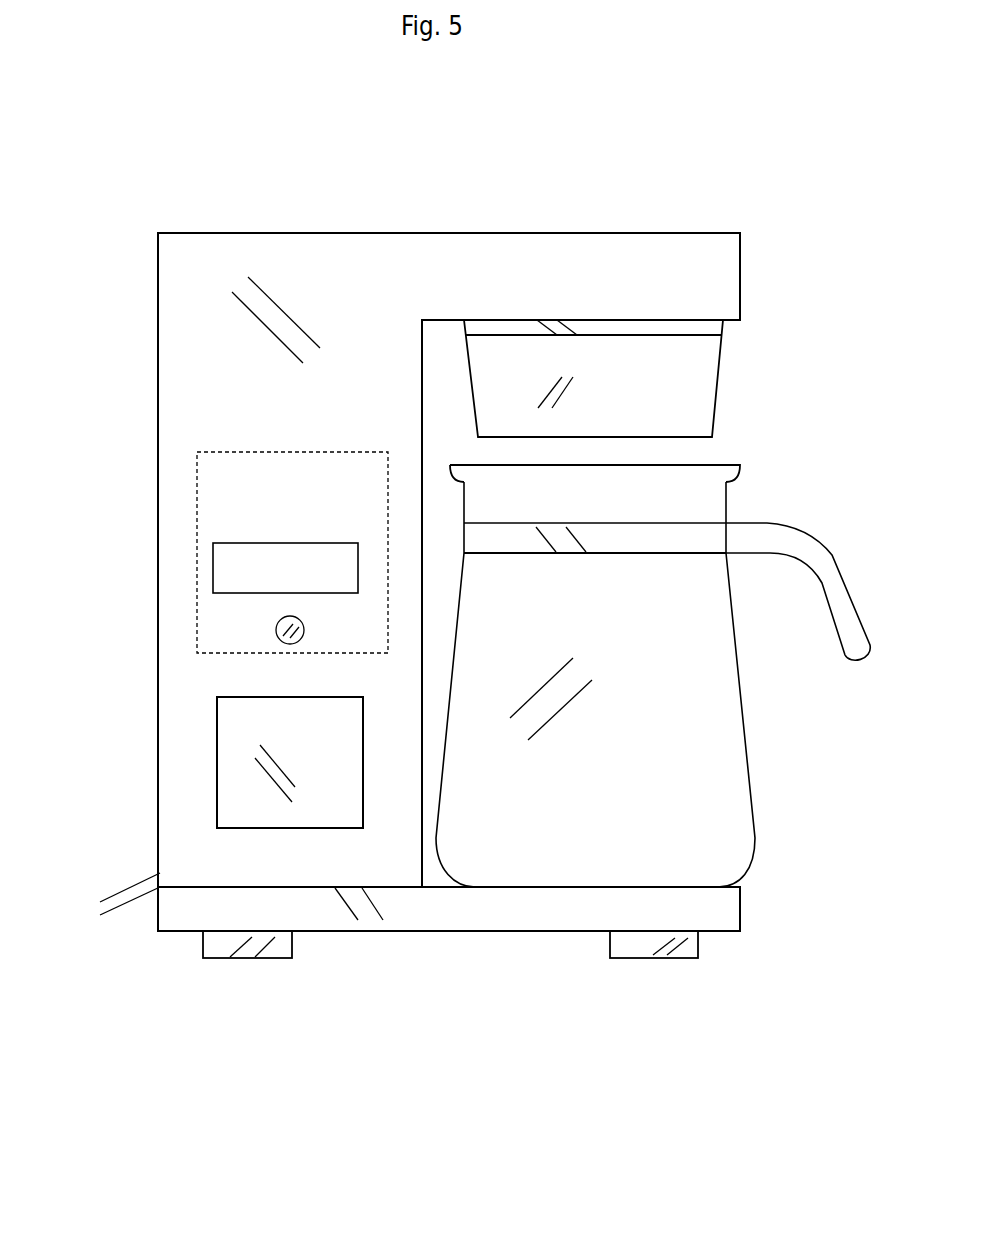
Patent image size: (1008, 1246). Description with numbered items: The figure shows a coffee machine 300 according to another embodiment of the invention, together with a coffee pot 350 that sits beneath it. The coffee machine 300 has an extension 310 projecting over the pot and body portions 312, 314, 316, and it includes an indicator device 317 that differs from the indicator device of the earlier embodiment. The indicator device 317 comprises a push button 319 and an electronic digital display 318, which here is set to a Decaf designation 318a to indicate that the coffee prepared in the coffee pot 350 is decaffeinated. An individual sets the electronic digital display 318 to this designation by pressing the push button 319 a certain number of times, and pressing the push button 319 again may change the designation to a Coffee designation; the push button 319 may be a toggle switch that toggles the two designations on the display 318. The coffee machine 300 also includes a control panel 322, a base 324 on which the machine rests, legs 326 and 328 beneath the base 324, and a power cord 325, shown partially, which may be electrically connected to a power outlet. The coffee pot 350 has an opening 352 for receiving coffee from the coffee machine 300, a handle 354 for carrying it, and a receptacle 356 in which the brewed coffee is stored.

The coffee machine 300 is at (627, 222).
The extension 310 is at (498, 268).
The portion 312 is at (655, 398).
The portion 314 is at (710, 333).
The portion 316 is at (212, 377).
The indicator device 317 is at (308, 450).
The electronic digital display 318 is at (272, 543).
The Decaf designation 318a is at (328, 555).
The push button 319 is at (290, 624).
The control panel 322 is at (232, 737).
The base 324 is at (202, 907).
The power cord 325 is at (137, 882).
The leg 326 is at (278, 950).
The leg 328 is at (622, 942).
The coffee pot 350 is at (788, 505).
The opening 352 is at (715, 465).
The handle 354 is at (795, 543).
The receptacle 356 is at (698, 810).